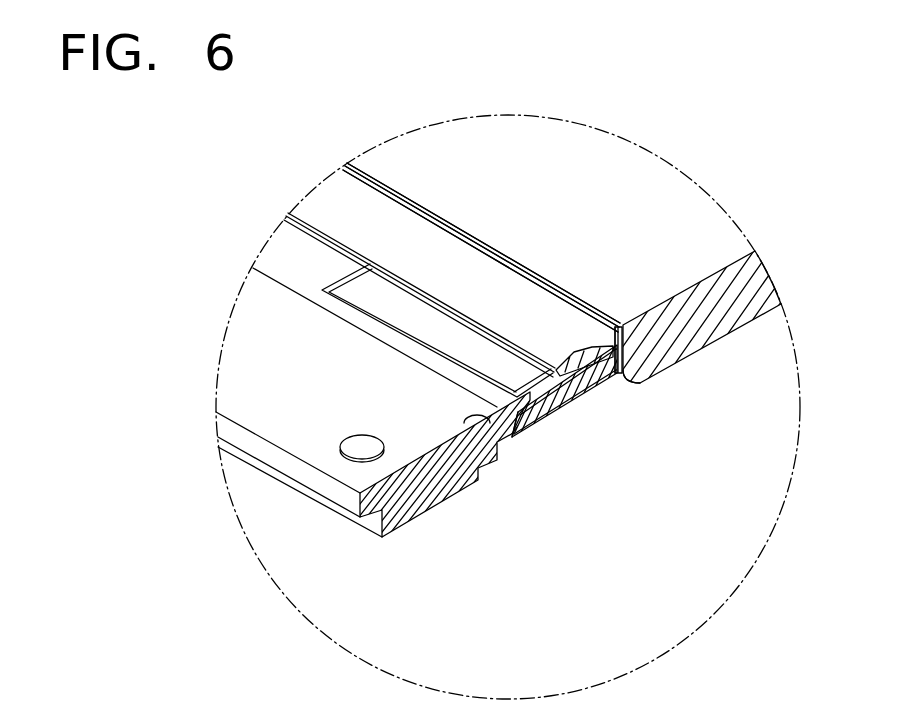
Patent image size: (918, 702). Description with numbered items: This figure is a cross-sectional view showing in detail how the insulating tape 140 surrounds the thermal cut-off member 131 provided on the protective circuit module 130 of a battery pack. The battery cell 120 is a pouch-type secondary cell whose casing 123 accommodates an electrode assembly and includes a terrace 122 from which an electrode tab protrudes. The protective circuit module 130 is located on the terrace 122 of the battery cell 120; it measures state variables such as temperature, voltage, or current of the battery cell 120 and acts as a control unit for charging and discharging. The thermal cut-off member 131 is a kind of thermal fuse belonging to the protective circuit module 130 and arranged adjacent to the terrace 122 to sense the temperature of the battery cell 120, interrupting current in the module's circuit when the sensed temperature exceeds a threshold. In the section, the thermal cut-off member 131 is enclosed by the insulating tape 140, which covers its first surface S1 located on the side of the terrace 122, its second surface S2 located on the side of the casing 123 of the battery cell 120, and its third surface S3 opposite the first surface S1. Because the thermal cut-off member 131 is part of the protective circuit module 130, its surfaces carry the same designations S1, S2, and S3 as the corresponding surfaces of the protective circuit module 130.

The battery cell 120 is at (703, 348).
The terrace 122 is at (445, 258).
The casing 123 is at (707, 290).
The protective circuit module 130 is at (238, 357).
The thermal cut-off member 131 is at (546, 378).
The insulating tape 140 is at (596, 392).
The first surface S1 is at (598, 345).
The second surface S2 is at (614, 383).
The third surface S3 is at (566, 387).